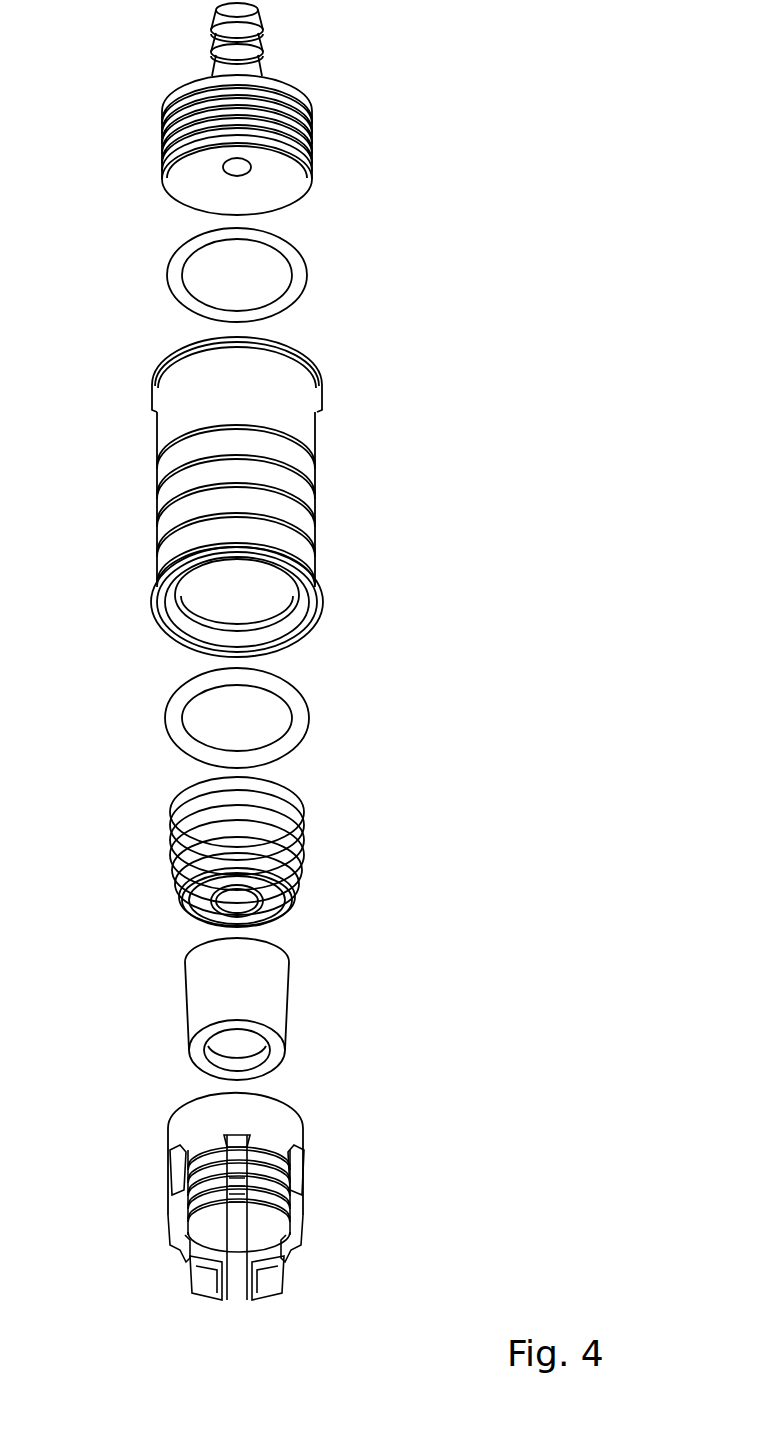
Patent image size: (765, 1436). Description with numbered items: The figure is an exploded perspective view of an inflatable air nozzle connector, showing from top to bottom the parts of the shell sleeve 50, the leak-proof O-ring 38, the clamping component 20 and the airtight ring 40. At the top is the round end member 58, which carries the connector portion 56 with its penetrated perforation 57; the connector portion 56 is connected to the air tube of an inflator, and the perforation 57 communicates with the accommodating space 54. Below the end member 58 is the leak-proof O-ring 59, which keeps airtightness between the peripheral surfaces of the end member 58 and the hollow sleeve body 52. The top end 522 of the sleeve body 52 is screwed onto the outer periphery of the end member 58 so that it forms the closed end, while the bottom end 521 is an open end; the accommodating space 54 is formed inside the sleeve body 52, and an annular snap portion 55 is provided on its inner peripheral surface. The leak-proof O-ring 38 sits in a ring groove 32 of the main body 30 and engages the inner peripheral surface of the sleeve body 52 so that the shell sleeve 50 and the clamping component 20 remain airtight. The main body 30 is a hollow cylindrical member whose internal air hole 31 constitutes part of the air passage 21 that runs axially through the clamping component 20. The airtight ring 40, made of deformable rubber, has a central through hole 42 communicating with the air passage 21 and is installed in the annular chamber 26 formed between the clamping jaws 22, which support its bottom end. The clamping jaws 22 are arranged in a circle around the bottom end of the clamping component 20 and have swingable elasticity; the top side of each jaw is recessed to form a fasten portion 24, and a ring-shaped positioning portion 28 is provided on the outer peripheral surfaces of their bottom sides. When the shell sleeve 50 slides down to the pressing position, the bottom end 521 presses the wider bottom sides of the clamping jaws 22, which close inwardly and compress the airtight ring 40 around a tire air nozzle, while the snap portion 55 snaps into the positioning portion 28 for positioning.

The clamping component 20 is at (266, 1056).
The air passage 21 is at (313, 900).
The clamping jaws 22 is at (167, 1247).
The fasten portion 24 is at (248, 1231).
The annular chamber 26 is at (253, 1247).
The positioning portion 28 is at (278, 1207).
The main body 30 is at (234, 835).
The air hole 31 is at (243, 902).
The ring groove 32 is at (272, 802).
The leak-proof element (O-ring) 38 is at (175, 727).
The airtight ring 40 is at (305, 1009).
The through hole 42 is at (240, 1038).
The shell sleeve 50 is at (277, 519).
The sleeve body 52 is at (298, 412).
The bottom end 521 is at (315, 613).
The top end 522 is at (158, 372).
The accommodating space 54 is at (216, 585).
The annular snap portion 55 is at (272, 617).
The connector portion 56 is at (263, 60).
The perforation 57 is at (229, 171).
The end member 58 is at (244, 119).
The leak-proof element (O-ring) 59 is at (175, 282).